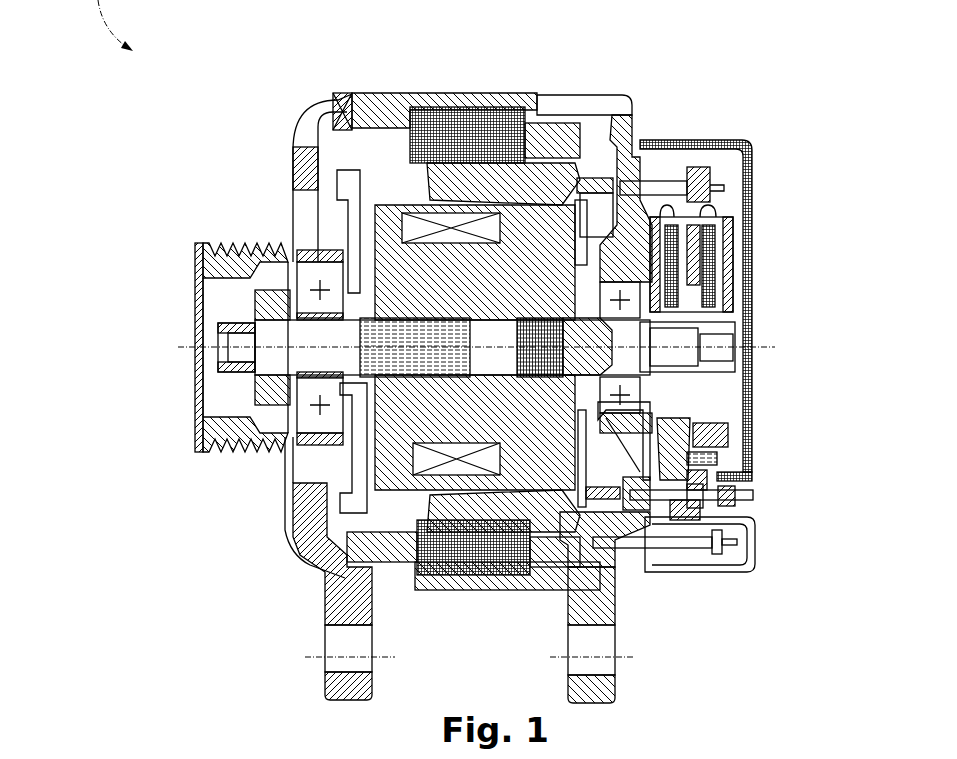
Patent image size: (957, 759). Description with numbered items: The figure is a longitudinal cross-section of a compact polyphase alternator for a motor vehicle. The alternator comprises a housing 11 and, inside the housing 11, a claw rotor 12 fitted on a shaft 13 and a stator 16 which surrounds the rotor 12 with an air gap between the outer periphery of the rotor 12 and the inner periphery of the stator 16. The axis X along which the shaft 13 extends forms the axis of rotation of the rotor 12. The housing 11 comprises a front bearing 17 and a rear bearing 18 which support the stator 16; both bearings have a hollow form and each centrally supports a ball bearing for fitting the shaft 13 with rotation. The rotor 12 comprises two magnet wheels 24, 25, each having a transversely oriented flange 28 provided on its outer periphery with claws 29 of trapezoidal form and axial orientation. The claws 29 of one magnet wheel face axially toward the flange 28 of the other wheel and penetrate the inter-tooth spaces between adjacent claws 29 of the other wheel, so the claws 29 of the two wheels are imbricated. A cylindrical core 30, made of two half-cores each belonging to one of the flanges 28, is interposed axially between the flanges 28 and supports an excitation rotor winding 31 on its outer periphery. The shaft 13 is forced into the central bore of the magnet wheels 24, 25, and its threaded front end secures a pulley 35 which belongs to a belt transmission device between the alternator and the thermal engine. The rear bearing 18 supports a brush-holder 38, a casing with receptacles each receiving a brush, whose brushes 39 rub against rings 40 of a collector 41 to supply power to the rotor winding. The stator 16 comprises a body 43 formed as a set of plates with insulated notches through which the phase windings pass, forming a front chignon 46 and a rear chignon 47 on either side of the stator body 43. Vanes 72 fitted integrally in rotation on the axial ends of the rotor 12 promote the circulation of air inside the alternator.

The axis X is at (190, 337).
The housing 11 is at (290, 110).
The claw rotor 12 is at (385, 207).
The shaft 13 is at (197, 272).
The stator 16 is at (617, 137).
The front bearing 17 is at (300, 232).
The rear bearing 18 is at (590, 450).
The magnet wheel 24 is at (340, 468).
The magnet wheel 25 is at (665, 582).
The flange 28 is at (305, 428).
The claws 29 is at (525, 100).
The cylindrical core 30 is at (512, 592).
The excitation rotor winding 31 is at (447, 600).
The pulley 35 is at (242, 292).
The brush-holder 38 is at (738, 238).
The brushes 39 is at (738, 272).
The rings 40 is at (748, 325).
The collector 41 is at (753, 367).
The stator body 43 is at (455, 100).
The front chignon 46 is at (345, 105).
The rear chignon 47 is at (578, 118).
The vanes 72 is at (757, 496).